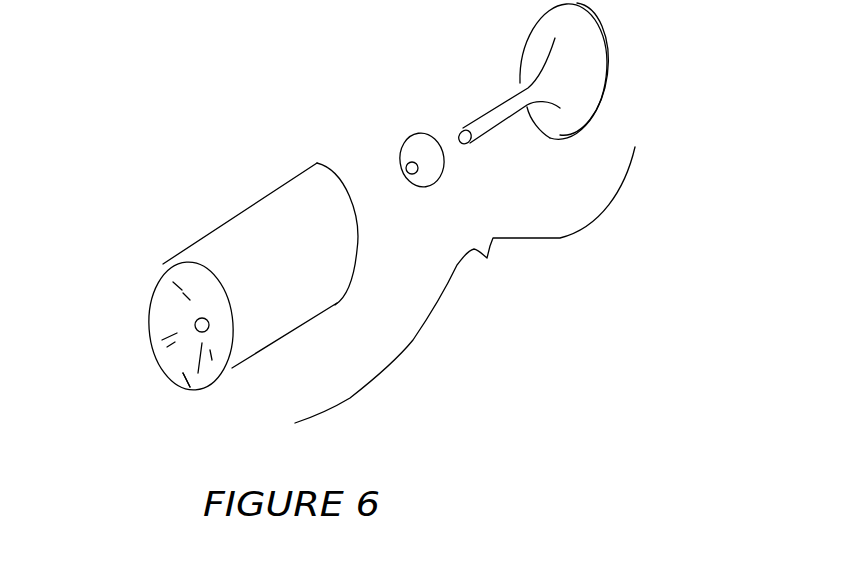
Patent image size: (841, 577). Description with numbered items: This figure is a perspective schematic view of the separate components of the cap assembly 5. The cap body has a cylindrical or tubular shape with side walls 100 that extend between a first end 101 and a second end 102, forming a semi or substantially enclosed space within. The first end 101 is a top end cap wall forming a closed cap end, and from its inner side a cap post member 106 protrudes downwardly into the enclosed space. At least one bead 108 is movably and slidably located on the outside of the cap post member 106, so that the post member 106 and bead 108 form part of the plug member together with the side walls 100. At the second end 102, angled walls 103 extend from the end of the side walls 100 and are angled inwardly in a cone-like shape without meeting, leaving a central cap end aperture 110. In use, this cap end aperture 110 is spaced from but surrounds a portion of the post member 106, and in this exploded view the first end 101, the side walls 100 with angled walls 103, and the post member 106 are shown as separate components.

The cap assembly 5 is at (465, 285).
The side walls 100 is at (297, 304).
The first end 101 is at (607, 62).
The second end 102 is at (152, 288).
The angled walls 103 is at (190, 390).
The cap post member 106 is at (487, 132).
The bead 108 is at (386, 147).
The cap end aperture 110 is at (192, 322).